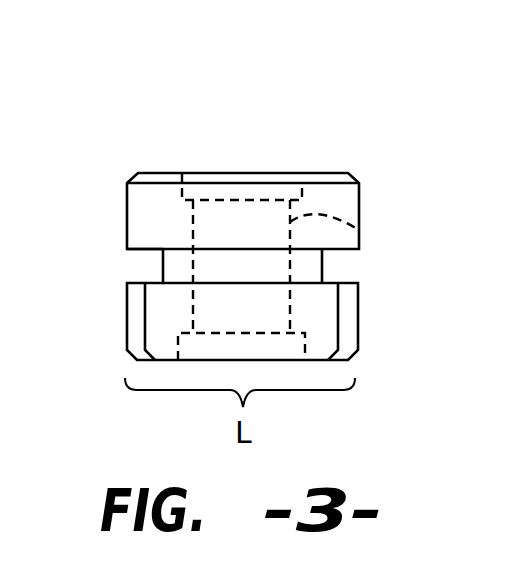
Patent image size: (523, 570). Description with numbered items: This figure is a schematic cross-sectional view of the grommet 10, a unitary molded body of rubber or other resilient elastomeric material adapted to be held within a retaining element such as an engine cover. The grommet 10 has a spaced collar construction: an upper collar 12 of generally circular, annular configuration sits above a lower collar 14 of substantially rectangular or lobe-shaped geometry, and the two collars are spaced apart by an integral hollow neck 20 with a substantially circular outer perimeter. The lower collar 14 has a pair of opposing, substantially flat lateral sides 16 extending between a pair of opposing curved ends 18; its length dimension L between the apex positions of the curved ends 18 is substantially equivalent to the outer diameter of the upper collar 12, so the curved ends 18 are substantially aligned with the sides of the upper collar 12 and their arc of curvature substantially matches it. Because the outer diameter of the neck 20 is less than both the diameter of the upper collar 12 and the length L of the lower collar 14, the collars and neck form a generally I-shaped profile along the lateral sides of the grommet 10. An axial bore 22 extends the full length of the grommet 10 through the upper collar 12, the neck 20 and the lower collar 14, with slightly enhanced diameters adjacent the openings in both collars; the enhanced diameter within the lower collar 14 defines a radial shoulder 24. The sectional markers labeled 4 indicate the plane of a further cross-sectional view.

The section line 4- 4 is at (50, 18).
The grommet 10 is at (283, 107).
The upper collar 12 is at (355, 171).
The lower collar 14 is at (366, 342).
The lateral sides 16 is at (330, 300).
The curved ends 18 is at (126, 306).
The hollow neck 20 is at (160, 270).
The axial bore 22 is at (359, 230).
The radial shoulder 24 is at (187, 363).